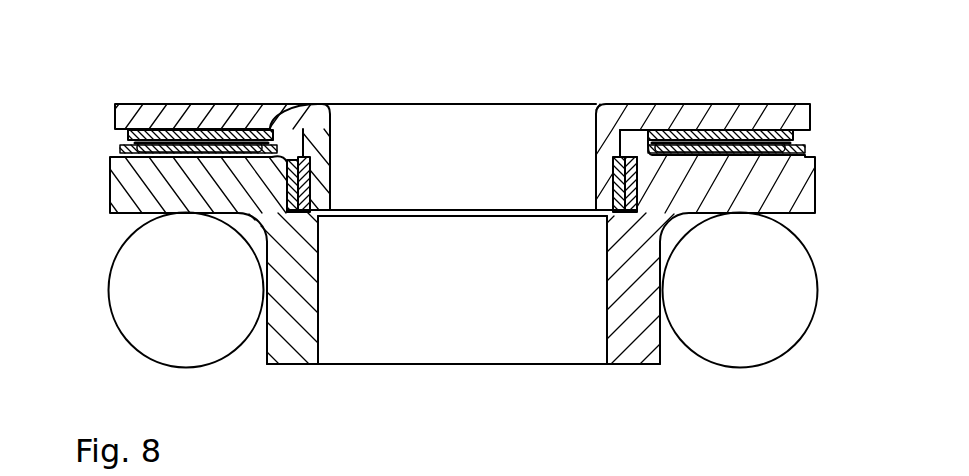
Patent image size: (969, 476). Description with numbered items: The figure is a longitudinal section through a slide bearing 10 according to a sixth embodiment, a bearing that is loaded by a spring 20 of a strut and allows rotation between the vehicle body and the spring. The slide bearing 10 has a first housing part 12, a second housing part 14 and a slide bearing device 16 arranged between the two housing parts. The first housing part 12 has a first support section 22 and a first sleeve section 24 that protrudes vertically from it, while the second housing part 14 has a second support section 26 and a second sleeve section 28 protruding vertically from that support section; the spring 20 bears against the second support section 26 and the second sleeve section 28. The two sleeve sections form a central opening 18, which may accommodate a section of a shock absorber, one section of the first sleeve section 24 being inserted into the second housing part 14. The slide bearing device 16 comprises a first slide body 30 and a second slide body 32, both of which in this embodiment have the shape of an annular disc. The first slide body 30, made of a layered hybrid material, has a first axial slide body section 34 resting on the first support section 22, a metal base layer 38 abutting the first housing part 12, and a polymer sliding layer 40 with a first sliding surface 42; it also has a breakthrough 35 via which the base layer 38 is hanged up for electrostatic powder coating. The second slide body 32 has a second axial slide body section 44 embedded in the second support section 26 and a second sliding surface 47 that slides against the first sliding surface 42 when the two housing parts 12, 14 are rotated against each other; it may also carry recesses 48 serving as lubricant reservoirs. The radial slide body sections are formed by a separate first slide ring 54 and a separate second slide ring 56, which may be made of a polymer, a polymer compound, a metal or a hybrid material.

The slide bearing 10 is at (696, 78).
The first housing part 12 is at (627, 113).
The second housing part 14 is at (217, 260).
The slide bearing device 16 is at (193, 125).
The central opening 18 is at (592, 344).
The spring 20 is at (778, 343).
The first support section 22 is at (136, 106).
The first sleeve section 24 is at (322, 130).
The second support section 26 is at (118, 195).
The second sleeve section 28 is at (306, 333).
The first slide body 30 is at (168, 132).
The second slide body 32 is at (212, 141).
The first axial slide body section 34 is at (243, 146).
The breakthrough 35 is at (291, 130).
The base layer 38 is at (265, 142).
The sliding layer 40 is at (745, 140).
The first sliding surface 42 is at (663, 130).
The second axial slide body section 44 is at (708, 130).
The second sliding surface 47 is at (805, 213).
The recess 48 is at (783, 140).
The first slide ring 54 is at (620, 170).
The second slide ring 56 is at (633, 192).